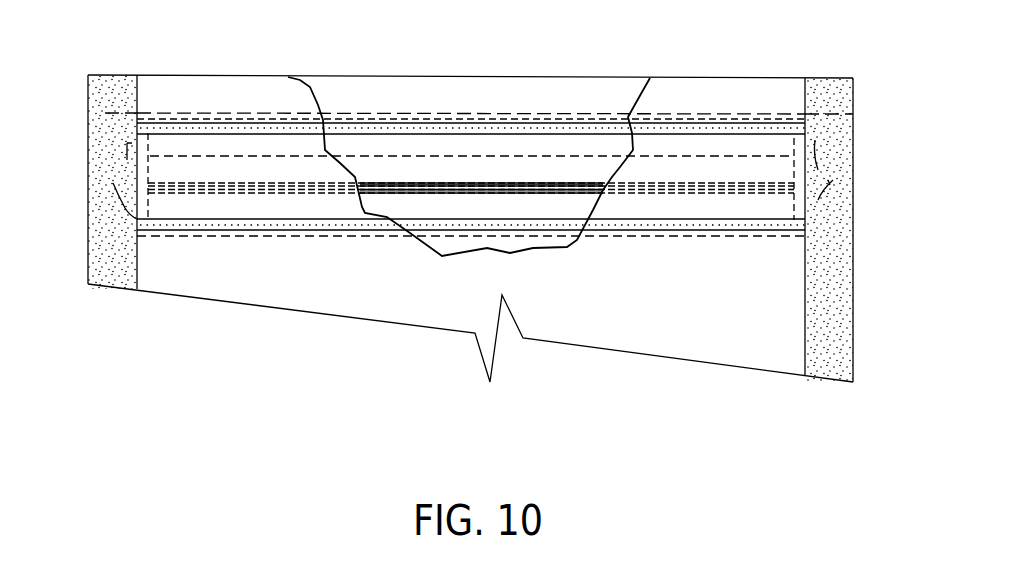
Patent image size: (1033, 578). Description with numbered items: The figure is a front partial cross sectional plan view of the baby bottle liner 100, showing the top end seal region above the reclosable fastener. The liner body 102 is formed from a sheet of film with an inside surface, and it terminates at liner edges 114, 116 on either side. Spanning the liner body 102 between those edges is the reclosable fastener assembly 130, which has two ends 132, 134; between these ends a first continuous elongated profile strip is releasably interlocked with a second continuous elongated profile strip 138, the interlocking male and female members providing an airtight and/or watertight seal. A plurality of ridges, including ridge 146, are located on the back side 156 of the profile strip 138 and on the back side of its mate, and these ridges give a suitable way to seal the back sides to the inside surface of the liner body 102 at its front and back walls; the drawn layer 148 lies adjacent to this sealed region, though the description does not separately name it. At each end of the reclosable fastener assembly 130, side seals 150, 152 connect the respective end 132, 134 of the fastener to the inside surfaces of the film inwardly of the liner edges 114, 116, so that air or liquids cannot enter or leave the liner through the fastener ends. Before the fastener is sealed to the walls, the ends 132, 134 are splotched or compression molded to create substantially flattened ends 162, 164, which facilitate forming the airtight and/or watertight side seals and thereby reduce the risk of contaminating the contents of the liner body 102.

The liner 100 is at (107, 50).
The liner body 102 is at (470, 327).
The liner edge 114 is at (853, 352).
The liner edge 116 is at (88, 258).
The reclosable fastener assembly 130 is at (705, 223).
The end of reclosable fastener 132 is at (830, 185).
The end of reclosable fastener 134 is at (113, 183).
The second continuous elongated profile strip 138 is at (462, 183).
The ridge 146 is at (250, 227).
The upper dielectric layer 148 is at (370, 132).
The side seal 150 is at (837, 138).
The side seal 152 is at (103, 130).
The back side 156 is at (435, 112).
The flattened end 162 is at (800, 177).
The flattened end 164 is at (147, 177).